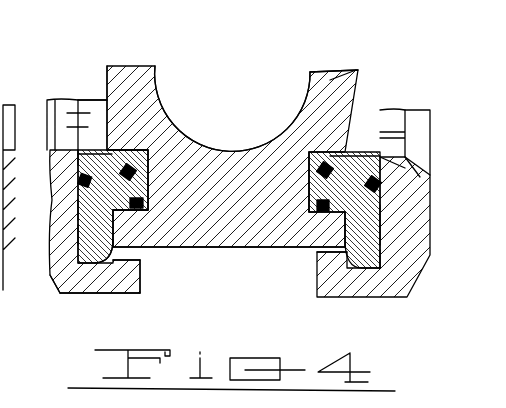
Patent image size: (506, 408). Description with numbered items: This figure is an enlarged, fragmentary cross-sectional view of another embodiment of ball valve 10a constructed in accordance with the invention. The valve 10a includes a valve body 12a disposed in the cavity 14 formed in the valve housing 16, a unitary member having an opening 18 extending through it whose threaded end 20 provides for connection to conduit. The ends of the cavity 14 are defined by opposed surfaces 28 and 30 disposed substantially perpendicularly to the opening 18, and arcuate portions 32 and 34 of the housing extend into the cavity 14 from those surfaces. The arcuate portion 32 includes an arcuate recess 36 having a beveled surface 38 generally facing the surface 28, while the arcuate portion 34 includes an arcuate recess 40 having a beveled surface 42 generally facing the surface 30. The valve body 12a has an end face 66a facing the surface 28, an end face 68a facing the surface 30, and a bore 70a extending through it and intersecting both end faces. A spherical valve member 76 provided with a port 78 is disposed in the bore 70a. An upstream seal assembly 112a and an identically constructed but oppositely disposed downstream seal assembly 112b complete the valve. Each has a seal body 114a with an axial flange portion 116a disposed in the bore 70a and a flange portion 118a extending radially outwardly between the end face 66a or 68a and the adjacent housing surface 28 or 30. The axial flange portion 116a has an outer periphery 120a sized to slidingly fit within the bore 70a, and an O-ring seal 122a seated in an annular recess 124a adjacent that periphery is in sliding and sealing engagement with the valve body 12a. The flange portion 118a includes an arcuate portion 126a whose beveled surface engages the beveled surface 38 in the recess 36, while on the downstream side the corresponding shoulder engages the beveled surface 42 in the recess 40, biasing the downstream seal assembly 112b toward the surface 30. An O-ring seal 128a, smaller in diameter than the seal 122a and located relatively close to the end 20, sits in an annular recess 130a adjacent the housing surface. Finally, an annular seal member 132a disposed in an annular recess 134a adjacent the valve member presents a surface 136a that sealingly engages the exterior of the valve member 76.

The ball valve 10a is at (347, 56).
The valve body 12a is at (230, 246).
The cavity 14 is at (184, 300).
The valve housing 16 is at (82, 292).
The opening 18 is at (65, 100).
The threaded end 20 is at (45, 108).
The opposed surface 28 is at (77, 212).
The opposed surface 30 is at (380, 216).
The arcuate portion 32 is at (132, 295).
The arcuate portion 34 is at (318, 297).
The arcuate recess 36 is at (92, 270).
The beveled surface 38 is at (140, 259).
The arcuate recess 40 is at (355, 268).
The beveled surface 42 is at (322, 262).
The end face 66a is at (110, 258).
The end face 68a is at (345, 240).
The bore 70a is at (253, 156).
The valve member 76 is at (334, 82).
The port 78 is at (243, 91).
The upstream seal assembly 112a is at (100, 116).
The downstream seal assembly 112b is at (374, 110).
The seal body 114a is at (398, 101).
The axial flange portion 116a is at (148, 190).
The flange portion 118a is at (78, 232).
The outer periphery 120a is at (143, 212).
The O-ring seal 122a is at (144, 203).
The annular recess 124a is at (125, 205).
The arcuate portion 126a is at (60, 283).
The O-ring seal 128a is at (78, 181).
The annular recess 130a is at (78, 158).
The annular seal member 132a is at (140, 170).
The annular recess 134a is at (124, 158).
The surface 136a is at (130, 160).